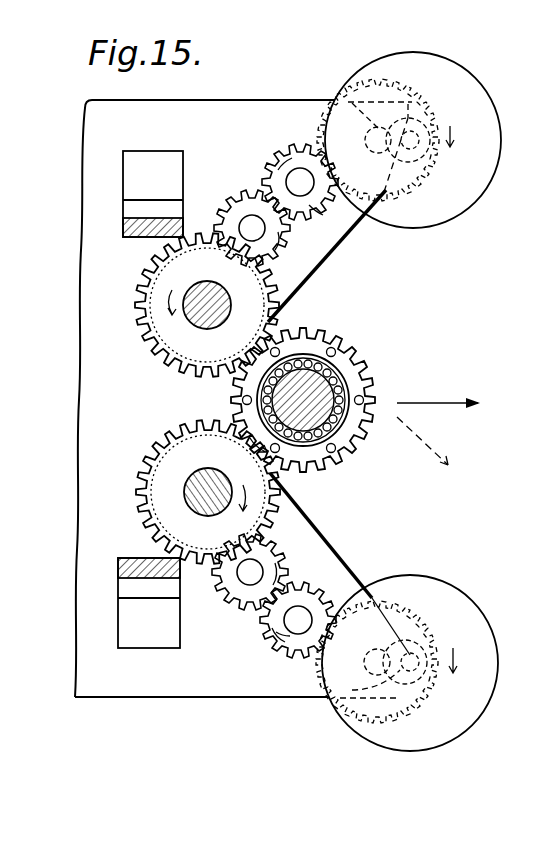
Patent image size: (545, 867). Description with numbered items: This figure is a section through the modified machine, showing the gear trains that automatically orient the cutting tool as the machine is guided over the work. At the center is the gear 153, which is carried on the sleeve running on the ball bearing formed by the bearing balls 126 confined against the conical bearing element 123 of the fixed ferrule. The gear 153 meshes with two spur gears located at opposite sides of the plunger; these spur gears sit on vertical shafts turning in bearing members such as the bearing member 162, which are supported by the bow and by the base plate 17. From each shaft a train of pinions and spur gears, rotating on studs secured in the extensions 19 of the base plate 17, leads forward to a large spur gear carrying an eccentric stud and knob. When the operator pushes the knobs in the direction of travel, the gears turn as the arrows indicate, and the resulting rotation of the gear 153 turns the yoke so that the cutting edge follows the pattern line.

The base plate 17 is at (128, 683).
The extensions of base plate 19 is at (285, 680).
The conical bearing element 123 is at (318, 391).
The bearing balls 126 is at (318, 360).
The gear 153 is at (350, 375).
The bearing member 162 is at (192, 288).